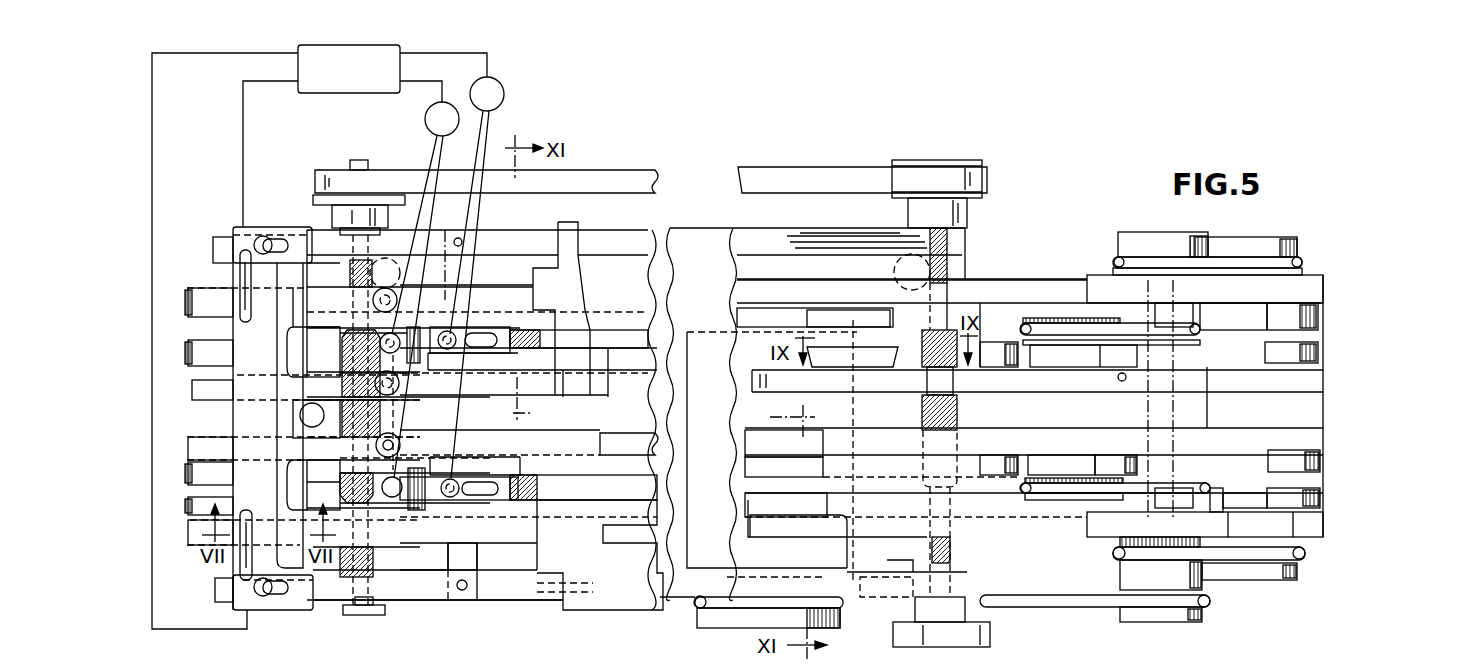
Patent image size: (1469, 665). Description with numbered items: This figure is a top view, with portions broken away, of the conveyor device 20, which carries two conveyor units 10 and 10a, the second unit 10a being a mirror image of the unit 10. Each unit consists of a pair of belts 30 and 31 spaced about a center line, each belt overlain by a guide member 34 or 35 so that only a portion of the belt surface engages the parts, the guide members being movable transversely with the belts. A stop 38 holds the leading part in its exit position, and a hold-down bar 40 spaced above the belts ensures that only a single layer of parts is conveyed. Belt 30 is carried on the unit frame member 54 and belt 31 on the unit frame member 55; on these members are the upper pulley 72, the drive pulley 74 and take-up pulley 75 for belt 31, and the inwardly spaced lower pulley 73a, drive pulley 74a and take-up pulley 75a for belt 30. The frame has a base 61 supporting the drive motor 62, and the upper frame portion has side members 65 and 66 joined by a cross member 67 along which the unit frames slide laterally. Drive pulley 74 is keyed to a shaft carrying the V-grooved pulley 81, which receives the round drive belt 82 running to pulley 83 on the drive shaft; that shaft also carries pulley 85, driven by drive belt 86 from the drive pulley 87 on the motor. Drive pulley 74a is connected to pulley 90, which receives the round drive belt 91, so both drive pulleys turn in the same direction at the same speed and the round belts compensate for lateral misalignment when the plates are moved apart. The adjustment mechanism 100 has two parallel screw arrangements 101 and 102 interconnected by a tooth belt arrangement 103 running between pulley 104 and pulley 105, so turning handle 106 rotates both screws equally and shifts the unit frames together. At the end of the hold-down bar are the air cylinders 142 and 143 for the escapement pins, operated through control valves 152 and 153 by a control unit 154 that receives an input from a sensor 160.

The conveyor unit 10 is at (1328, 422).
The second conveyor unit 10a is at (1318, 268).
The device 20 is at (1040, 265).
The belt 30 is at (630, 443).
The belt 31 is at (775, 505).
The guide member 34 is at (523, 442).
The guide member 35 is at (503, 533).
The stop 38 is at (237, 435).
The hold-down bar 40 is at (583, 415).
The unit frame member 54 is at (1273, 433).
The unit frame member 55 is at (1325, 535).
The base 61 is at (693, 247).
The drive motor 62 is at (715, 494).
The side member 65 is at (510, 242).
The side member 66 is at (415, 585).
The cross member 67 is at (447, 277).
The upper pulley 72 is at (1323, 497).
The lower pulley 73a is at (1112, 436).
The drive pulley 74 is at (1243, 498).
The drive pulley 74a is at (1061, 436).
The take-up pulley 75 is at (1180, 493).
The take-up pulley 75a is at (1002, 436).
The pulley 81 is at (1283, 578).
The drive belt 82 is at (1305, 560).
The pulley 83 is at (1125, 570).
The pulley 85 is at (1157, 622).
The drive belt 86 is at (1085, 607).
The drive pulley 87 is at (838, 623).
The pulley 90 is at (1072, 500).
The drive belt 91 is at (1150, 473).
The adjustment mechanism 100 is at (767, 160).
The screw arrangement 101 is at (923, 405).
The screw arrangement 102 is at (380, 425).
The tooth belt arrangement 103 is at (842, 182).
The pulley 104 is at (950, 160).
The pulley 105 is at (393, 170).
The handle 106 is at (987, 643).
The cylinder 142 is at (425, 400).
The cylinder 143 is at (467, 395).
The control valve 152 is at (452, 138).
The control valve 153 is at (502, 88).
The control unit 154 is at (333, 95).
The sensor 160 is at (240, 283).